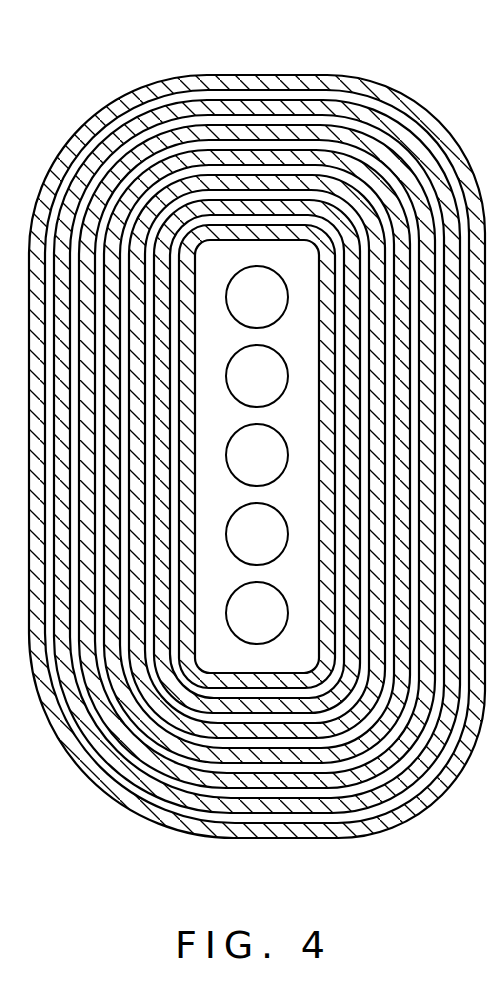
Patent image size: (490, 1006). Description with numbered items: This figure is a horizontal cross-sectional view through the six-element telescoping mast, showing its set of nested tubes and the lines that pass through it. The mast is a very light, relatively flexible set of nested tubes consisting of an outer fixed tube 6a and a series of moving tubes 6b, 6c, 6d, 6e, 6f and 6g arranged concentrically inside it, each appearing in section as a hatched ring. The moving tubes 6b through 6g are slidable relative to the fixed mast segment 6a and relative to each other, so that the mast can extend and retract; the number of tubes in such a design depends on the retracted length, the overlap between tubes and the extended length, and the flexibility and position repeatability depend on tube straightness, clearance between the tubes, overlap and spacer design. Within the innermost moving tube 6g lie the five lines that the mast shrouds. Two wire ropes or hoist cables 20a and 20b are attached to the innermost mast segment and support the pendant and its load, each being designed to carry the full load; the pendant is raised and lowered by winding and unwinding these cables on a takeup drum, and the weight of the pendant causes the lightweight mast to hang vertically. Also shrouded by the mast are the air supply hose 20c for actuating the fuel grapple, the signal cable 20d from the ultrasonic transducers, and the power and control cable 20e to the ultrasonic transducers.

The fixed tube 6a is at (213, 75).
The moving tube 6b is at (143, 98).
The moving tube 6c is at (85, 132).
The moving tube 6d is at (207, 763).
The moving tube 6e is at (178, 728).
The moving tube 6f is at (177, 698).
The moving tube 6g is at (242, 678).
The hoist cable 20a is at (235, 542).
The hoist cable 20b is at (235, 384).
The air supply hose 20c is at (235, 463).
The signal cable 20d is at (235, 621).
The power and control cable 20e is at (235, 305).